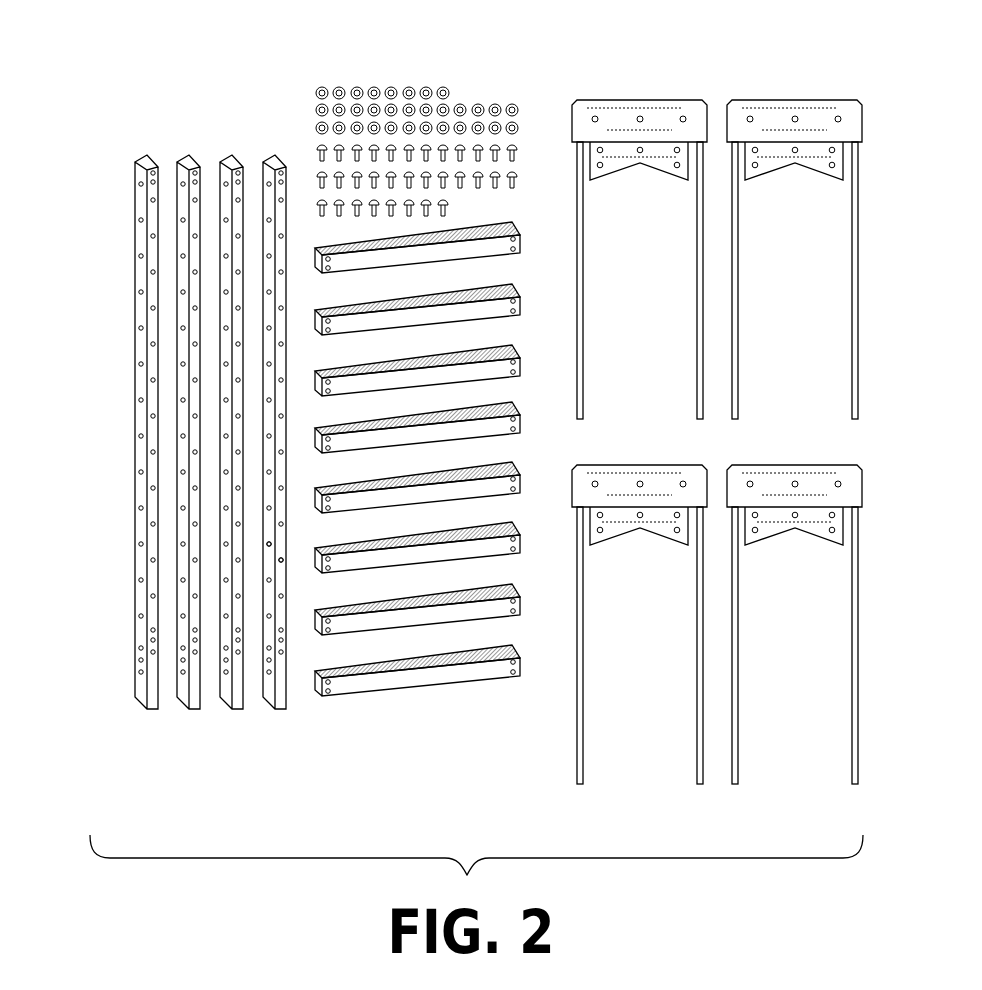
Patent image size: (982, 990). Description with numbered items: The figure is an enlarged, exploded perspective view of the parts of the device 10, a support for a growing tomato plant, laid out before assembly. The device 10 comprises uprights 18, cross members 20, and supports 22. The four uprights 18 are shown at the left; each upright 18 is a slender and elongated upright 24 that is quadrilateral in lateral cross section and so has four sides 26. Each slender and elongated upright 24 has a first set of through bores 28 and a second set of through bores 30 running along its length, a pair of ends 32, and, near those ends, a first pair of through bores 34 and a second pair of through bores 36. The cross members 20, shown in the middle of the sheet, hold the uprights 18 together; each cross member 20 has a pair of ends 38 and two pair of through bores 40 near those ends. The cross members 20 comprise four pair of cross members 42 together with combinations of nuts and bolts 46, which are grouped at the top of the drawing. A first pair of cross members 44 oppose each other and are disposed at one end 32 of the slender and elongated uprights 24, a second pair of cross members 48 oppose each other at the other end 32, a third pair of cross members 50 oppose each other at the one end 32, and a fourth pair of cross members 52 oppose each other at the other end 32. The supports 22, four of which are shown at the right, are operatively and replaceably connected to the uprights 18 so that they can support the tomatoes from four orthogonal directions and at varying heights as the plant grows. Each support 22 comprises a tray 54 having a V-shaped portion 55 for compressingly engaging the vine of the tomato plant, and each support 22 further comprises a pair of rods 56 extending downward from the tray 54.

The device 10 is at (256, 73).
The uprights 18 is at (134, 214).
The slender and elongated upright 24 is at (197, 433).
The cross members 20 is at (437, 681).
The four pair of cross members 42 is at (432, 442).
The supports 22 is at (817, 114).
The sides 26 is at (196, 162).
The first set of through bores 28 is at (284, 562).
The second set of through bores 30 is at (272, 543).
The ends 32 is at (146, 161).
The first pair of through bores 34 is at (264, 168).
The second pair of through bores 36 is at (277, 172).
The ends 38 is at (316, 262).
The two pair of through bores 40 is at (330, 262).
The first pair of cross members 44 is at (443, 640).
The combinations of nuts and bolts 46 is at (527, 85).
The second pair of cross members 48 is at (443, 517).
The third pair of cross members 50 is at (443, 399).
The fourth pair of cross members 52 is at (432, 262).
The tray 54 is at (626, 118).
The V-shaped portion 55 is at (766, 164).
The pair of rods 56 is at (692, 283).